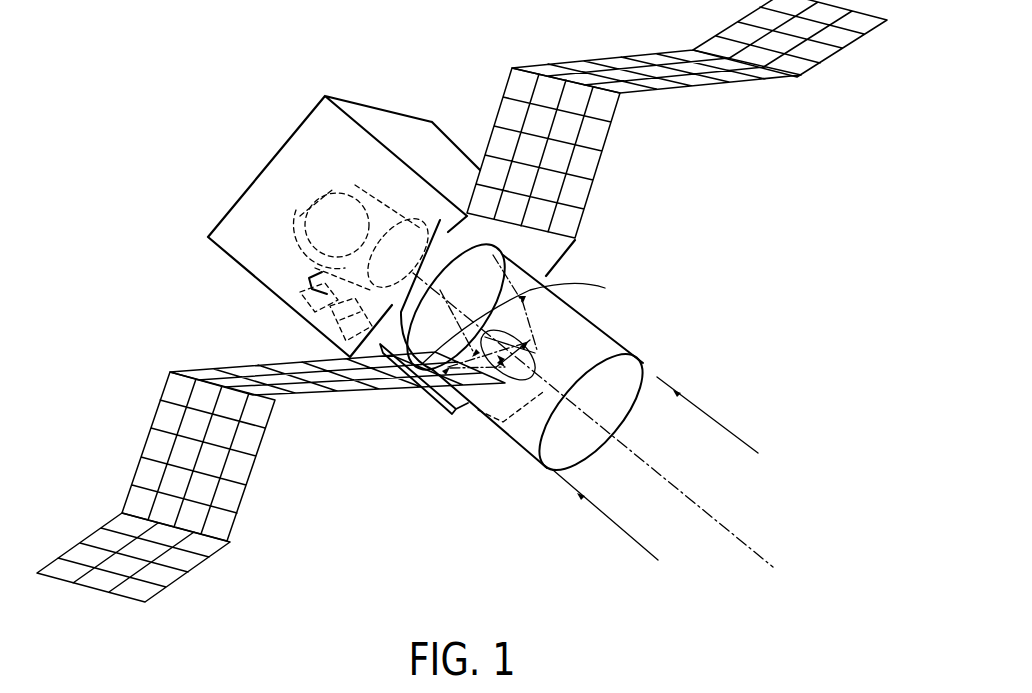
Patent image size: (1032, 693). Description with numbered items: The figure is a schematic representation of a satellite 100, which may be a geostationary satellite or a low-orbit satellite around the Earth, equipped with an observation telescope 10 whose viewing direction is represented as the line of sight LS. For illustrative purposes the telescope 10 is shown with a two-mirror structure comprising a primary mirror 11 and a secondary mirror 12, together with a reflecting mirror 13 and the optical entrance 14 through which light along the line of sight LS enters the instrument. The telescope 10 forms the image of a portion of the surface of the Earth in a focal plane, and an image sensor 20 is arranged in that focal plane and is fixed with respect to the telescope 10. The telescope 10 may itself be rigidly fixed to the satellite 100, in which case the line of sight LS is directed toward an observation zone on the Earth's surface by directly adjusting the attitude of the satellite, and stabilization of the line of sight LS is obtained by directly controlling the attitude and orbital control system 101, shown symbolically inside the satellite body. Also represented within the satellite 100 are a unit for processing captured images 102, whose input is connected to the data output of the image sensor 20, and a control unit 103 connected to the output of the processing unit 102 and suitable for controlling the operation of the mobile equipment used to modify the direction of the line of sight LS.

The satellite 100 is at (222, 252).
The attitude and orbital control system 101 is at (290, 228).
The unit for processing captured images 102 is at (327, 341).
The control unit 103 is at (300, 311).
The telescope 10 is at (565, 353).
The primary mirror 11 is at (492, 288).
The secondary mirror 12 is at (535, 372).
The reflecting mirror 13 is at (605, 288).
The optical entrance 14 is at (627, 383).
The image sensor 20 is at (437, 400).
The line of sight LS is at (747, 543).